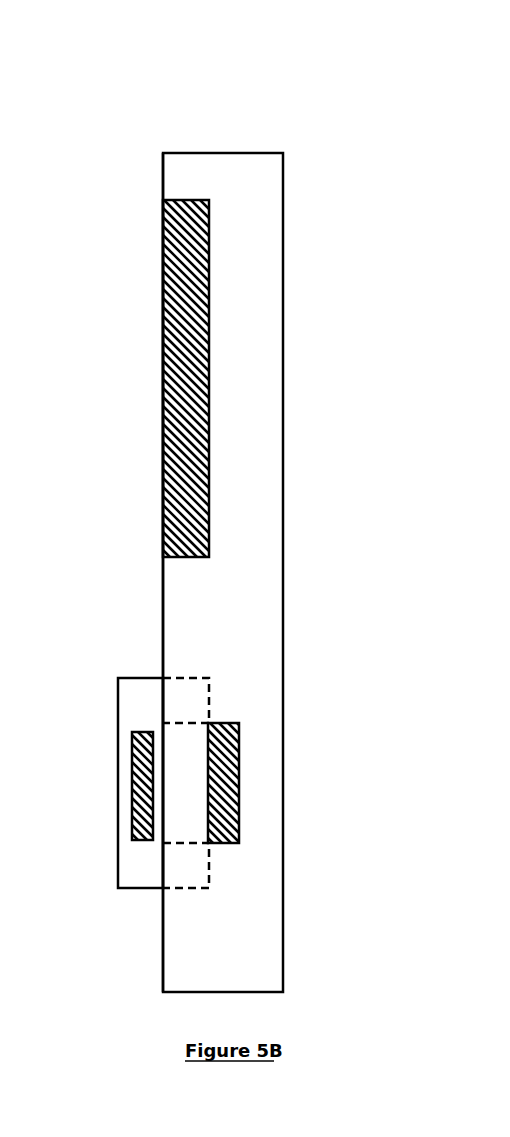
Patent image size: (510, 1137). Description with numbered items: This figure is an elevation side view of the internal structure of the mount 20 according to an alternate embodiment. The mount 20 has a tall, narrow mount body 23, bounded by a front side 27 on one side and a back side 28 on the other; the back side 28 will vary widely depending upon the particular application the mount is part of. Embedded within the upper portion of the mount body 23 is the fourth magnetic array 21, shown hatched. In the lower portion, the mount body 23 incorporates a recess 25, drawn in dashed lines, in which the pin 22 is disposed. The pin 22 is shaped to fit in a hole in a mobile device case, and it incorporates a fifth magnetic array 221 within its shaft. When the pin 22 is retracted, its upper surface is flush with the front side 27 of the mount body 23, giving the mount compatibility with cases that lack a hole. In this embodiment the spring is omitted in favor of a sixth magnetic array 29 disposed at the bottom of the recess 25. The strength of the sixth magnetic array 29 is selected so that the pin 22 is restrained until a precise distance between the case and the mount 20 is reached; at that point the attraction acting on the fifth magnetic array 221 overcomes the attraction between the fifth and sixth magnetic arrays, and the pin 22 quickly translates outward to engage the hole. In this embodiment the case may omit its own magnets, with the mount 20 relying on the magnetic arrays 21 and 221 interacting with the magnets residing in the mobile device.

The mount 20 is at (203, 140).
The fourth magnetic array 21 is at (177, 330).
The pin 22 is at (118, 732).
The fifth magnetic array 221 is at (142, 737).
The mount body 23 is at (233, 599).
The recess 25 is at (188, 690).
The front side 27 is at (163, 605).
The back side 28 is at (283, 462).
The sixth magnetic array 29 is at (235, 765).